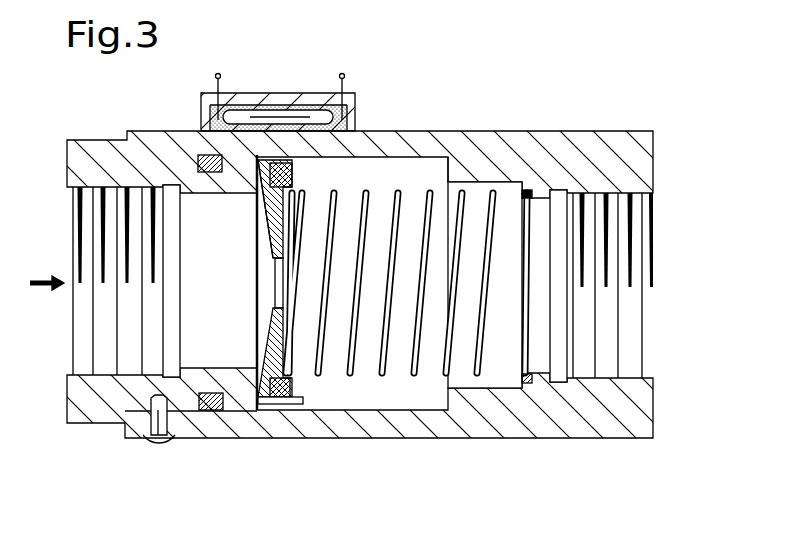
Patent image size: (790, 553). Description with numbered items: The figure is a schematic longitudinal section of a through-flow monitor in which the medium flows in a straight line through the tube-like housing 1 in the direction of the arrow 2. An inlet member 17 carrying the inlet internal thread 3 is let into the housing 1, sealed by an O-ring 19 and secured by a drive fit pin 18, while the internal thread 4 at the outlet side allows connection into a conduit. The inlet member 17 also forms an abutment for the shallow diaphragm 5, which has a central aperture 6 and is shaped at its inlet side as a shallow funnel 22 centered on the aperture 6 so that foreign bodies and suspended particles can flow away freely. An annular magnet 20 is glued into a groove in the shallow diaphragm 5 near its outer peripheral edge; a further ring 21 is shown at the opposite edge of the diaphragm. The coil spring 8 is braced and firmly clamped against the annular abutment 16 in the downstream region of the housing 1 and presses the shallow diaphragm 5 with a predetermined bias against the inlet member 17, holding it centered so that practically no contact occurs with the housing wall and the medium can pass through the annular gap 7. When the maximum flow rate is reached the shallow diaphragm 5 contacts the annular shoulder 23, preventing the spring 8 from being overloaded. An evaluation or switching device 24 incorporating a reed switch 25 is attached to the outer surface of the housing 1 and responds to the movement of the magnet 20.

The housing 1 is at (560, 141).
The arrow 2 is at (47, 270).
The internal thread 3 is at (92, 222).
The internal thread 4 is at (628, 228).
The shallow diaphragm 5 is at (267, 207).
The central aperture 6 is at (278, 287).
The annular gap 7 is at (280, 410).
The coil spring 8 is at (487, 192).
The annular abutment 16 is at (530, 385).
The inlet member 17 is at (87, 408).
The drive fit pin 18 is at (158, 427).
The O-ring 19 is at (212, 410).
The annular magnet 20 is at (292, 172).
The sealing ring 21 is at (302, 398).
The shallow funnel 22 is at (268, 245).
The annular shoulder 23 is at (443, 168).
The evaluation or switching device 24 is at (233, 93).
The reed switch 25 is at (277, 128).